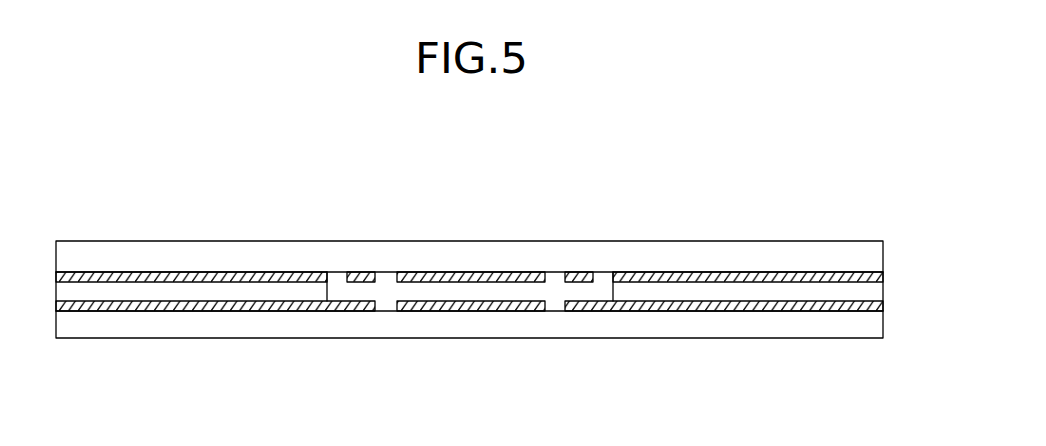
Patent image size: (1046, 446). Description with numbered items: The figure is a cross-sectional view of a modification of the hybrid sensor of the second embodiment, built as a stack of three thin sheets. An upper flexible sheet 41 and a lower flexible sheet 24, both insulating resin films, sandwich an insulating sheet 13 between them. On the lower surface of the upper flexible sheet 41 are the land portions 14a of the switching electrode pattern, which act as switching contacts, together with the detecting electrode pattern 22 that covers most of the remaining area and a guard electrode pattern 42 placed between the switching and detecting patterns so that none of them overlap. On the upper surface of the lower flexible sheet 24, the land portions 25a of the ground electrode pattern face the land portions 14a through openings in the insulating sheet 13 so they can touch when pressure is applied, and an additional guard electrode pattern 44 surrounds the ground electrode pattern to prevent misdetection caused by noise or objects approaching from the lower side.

The upper flexible sheet 41 is at (868, 258).
The insulating sheet 13 is at (865, 292).
The lower flexible sheet 24 is at (868, 327).
The detecting electrode pattern 22 is at (220, 272).
The guard electrode pattern 42 is at (357, 272).
The land portions 14a is at (480, 273).
The guard electrode pattern 44 is at (235, 312).
The land portions 25a is at (473, 312).